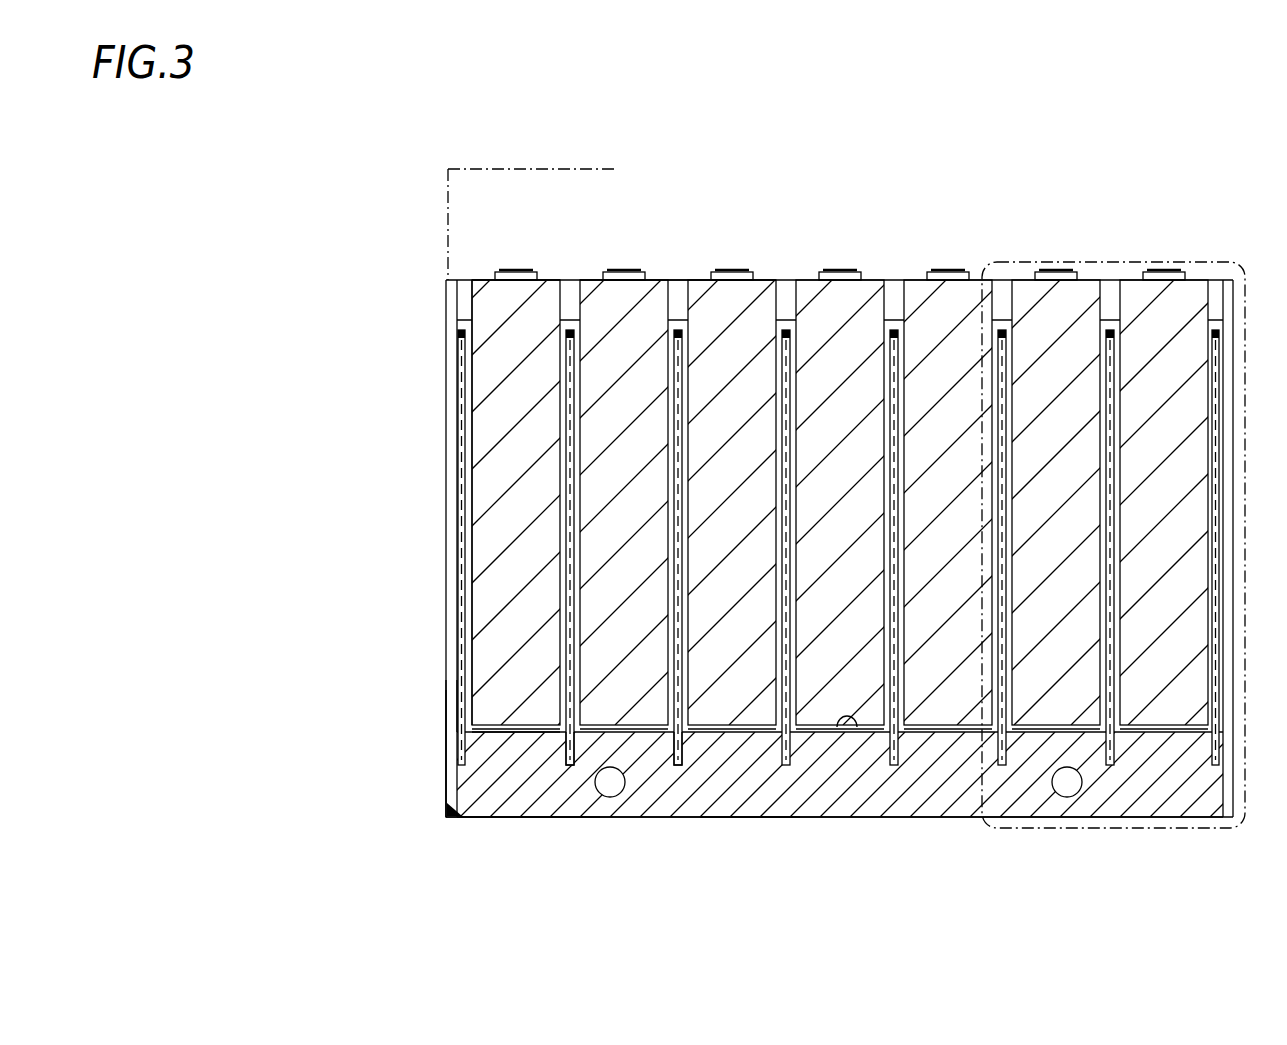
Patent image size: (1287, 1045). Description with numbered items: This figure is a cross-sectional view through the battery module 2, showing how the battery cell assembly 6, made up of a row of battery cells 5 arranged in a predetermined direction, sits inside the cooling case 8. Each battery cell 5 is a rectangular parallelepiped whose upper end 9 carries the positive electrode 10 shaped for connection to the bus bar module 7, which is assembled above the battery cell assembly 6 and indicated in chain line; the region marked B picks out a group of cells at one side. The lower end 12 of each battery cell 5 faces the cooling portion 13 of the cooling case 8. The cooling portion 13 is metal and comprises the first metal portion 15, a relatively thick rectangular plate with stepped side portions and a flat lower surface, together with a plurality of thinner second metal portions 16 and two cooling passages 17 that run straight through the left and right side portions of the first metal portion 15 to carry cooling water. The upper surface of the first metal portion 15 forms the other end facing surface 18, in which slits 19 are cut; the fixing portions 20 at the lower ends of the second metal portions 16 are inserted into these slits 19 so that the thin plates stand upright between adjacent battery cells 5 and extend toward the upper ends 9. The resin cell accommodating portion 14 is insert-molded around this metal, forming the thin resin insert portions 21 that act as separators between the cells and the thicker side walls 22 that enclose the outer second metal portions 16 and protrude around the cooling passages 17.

The battery module 2 is at (386, 152).
The battery cell 5 is at (598, 298).
The battery cell assembly 6 is at (658, 278).
The bus bar module 7 is at (598, 169).
The cooling case 8 is at (352, 742).
The upper end 9 is at (490, 278).
The positive electrode 10 is at (518, 268).
The lower end 12 is at (525, 730).
The cooling portion 13 is at (483, 818).
The cell accommodating portion 14 is at (445, 698).
The first metal portion 15 is at (753, 788).
The second metal portion 16 is at (458, 580).
The cooling passage 17 is at (610, 790).
The other end facing surface 18 is at (847, 730).
The slit 19 is at (568, 765).
The fixing portion 20 is at (678, 748).
The resin insert portion 21 is at (560, 660).
The side wall 22 is at (450, 432).
The battery block B is at (1115, 262).